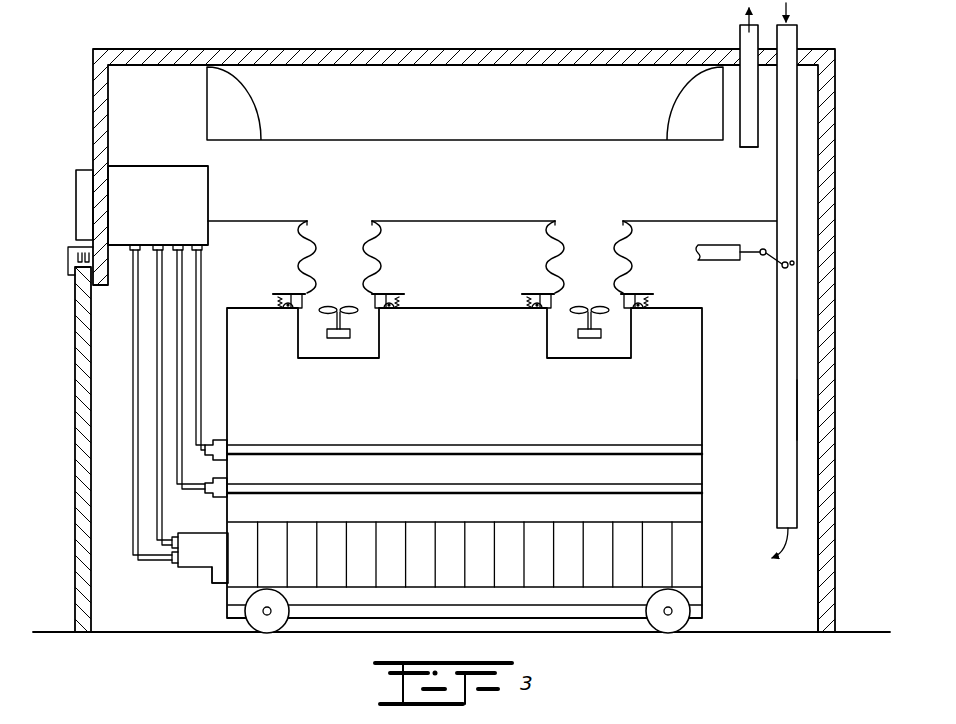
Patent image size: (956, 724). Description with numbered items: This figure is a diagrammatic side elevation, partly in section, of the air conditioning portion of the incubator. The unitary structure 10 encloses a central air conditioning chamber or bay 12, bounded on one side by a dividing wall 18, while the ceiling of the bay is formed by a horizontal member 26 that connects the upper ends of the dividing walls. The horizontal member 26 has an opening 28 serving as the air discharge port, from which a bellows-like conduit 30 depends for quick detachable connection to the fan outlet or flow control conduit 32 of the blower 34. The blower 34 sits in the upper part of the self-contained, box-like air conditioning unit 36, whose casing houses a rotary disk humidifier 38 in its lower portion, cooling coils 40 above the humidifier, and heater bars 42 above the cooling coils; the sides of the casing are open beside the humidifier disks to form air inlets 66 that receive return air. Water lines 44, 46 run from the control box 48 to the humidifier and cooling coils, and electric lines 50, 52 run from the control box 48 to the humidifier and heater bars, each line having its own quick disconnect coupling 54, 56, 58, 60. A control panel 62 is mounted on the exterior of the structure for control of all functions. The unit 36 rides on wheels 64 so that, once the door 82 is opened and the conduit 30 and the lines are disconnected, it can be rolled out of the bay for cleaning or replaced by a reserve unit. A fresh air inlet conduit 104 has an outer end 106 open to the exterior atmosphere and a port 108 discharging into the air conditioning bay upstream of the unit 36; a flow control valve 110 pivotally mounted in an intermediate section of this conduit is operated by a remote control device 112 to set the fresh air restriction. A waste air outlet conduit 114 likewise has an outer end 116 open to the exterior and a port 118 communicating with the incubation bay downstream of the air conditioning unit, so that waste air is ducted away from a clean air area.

The unitary structure 10 is at (840, 73).
The central air conditioning chamber or bay 12 is at (808, 408).
The wall 18 is at (830, 470).
The horizontal member 26 is at (255, 221).
The opening 28 is at (345, 222).
The bellows-like conduit 30 is at (376, 256).
The fan outlet or flow control conduit 32 is at (372, 301).
The blower 34 is at (350, 333).
The air conditioning unit 36 is at (708, 376).
The rotary disk humidifier 38 is at (700, 572).
The cooling coils 40 is at (657, 493).
The heater bars 42 is at (653, 455).
The water line 44 is at (157, 490).
The water line 46 is at (177, 438).
The control box 48 is at (136, 165).
The electric line 50 is at (135, 560).
The electric line 52 is at (202, 386).
The quick disconnect coupling 54 is at (175, 535).
The quick disconnect coupling 56 is at (224, 486).
The quick disconnect coupling 58 is at (178, 568).
The quick disconnect coupling 60 is at (224, 443).
The control panel 62 is at (76, 200).
The wheels 64 is at (262, 630).
The air inlets 66 is at (660, 548).
The door 82 is at (75, 388).
The fresh air inlet conduit 104 is at (798, 156).
The outer end 106 is at (797, 26).
The port 108 is at (795, 532).
The flow control valve 110 is at (790, 266).
The remote control device 112 is at (718, 245).
The waste air outlet conduit 114 is at (740, 36).
The outer end 116 is at (742, 26).
The port 118 is at (741, 146).